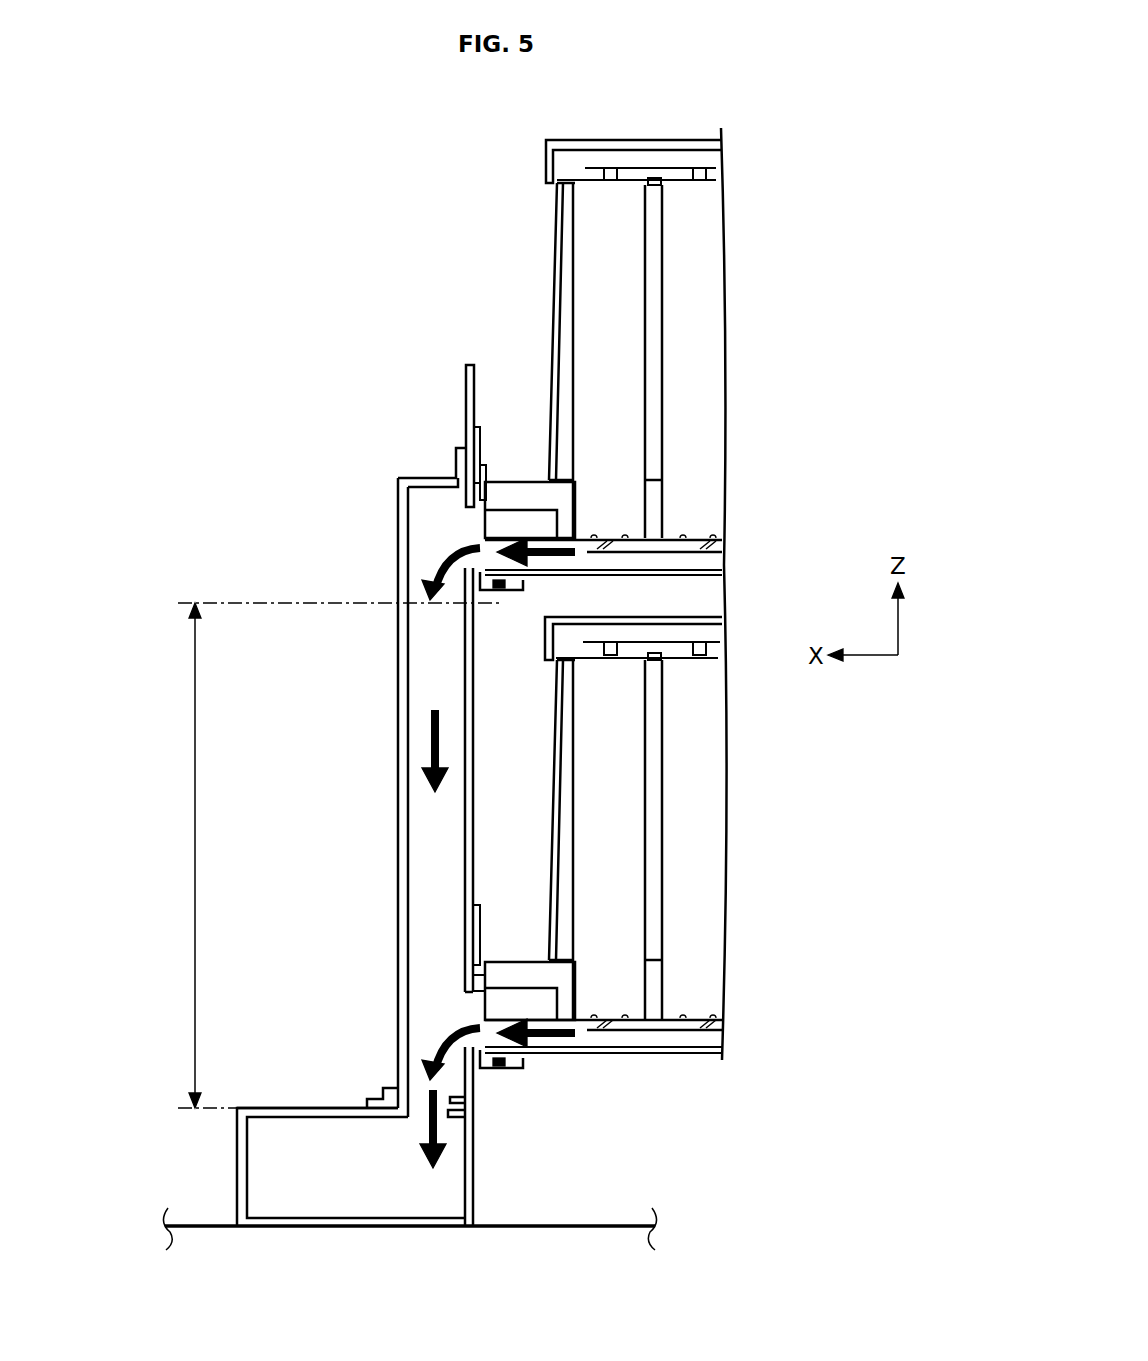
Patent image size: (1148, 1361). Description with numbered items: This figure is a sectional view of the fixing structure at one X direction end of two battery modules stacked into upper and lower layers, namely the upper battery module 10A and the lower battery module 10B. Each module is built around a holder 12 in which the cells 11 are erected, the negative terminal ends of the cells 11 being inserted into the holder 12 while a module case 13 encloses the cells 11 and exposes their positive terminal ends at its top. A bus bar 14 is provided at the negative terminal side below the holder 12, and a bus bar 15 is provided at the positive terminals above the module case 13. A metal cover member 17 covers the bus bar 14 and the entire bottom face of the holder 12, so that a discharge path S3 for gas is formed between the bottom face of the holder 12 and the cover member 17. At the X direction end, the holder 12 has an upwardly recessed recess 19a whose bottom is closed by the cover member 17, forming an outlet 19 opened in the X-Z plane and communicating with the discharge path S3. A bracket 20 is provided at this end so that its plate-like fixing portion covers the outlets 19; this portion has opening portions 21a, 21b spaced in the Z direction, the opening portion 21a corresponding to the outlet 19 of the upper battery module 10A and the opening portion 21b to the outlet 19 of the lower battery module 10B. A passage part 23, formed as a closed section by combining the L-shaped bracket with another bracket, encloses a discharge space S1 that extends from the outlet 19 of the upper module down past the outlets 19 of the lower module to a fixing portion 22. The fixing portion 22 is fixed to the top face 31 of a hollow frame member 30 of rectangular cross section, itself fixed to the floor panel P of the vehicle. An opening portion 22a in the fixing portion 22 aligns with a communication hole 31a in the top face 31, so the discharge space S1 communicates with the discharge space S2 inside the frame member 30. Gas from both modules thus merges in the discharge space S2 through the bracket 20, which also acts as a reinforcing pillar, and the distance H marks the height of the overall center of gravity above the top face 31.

The upper battery module 10A is at (700, 142).
The lower battery module 10B is at (700, 612).
The cell 11 is at (631, 602).
The holder 12 is at (517, 474).
The module case 13 is at (557, 258).
The bus bar 14 is at (612, 556).
The bus bar 15 is at (632, 166).
The cover member 17 is at (527, 592).
The outlet 19 is at (476, 545).
The recess 19a is at (497, 525).
The bracket 20 is at (456, 386).
The opening portion 21a is at (470, 494).
The opening portion 21b is at (470, 1000).
The fixing portion 22 is at (375, 1098).
The opening portion 22a is at (448, 1094).
The passage part 23 is at (400, 694).
The frame member 30 is at (228, 1168).
The top face 31 is at (320, 1108).
The communication hole 31a is at (445, 1115).
The discharge space S1 is at (415, 822).
The discharge space S2 is at (352, 1196).
The discharge path S3 is at (645, 562).
The distance H is at (192, 882).
The floor panel P is at (583, 1228).